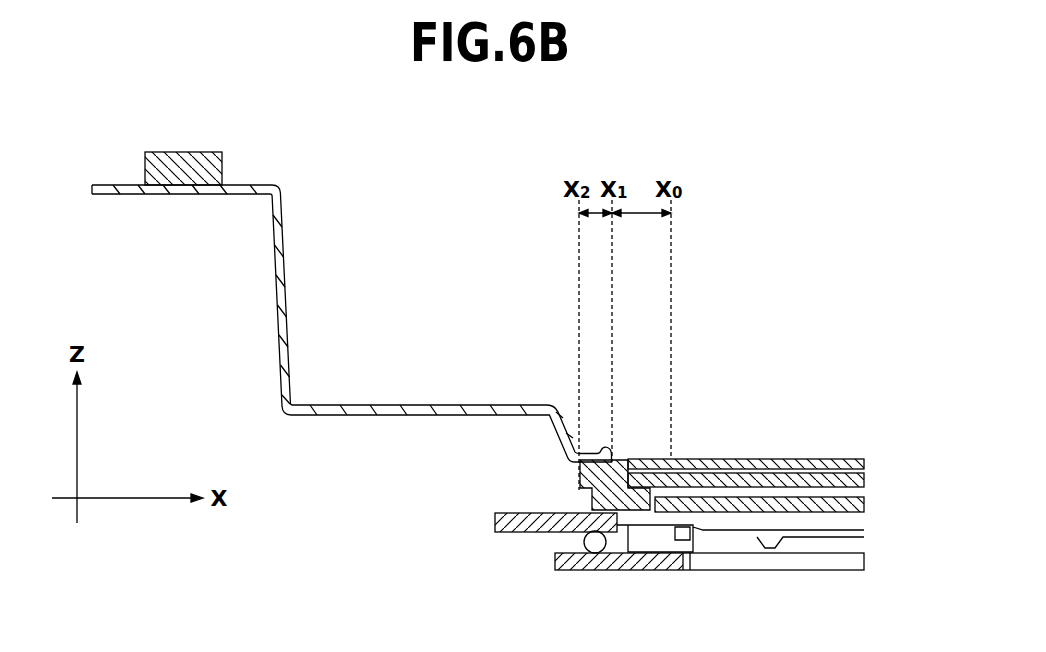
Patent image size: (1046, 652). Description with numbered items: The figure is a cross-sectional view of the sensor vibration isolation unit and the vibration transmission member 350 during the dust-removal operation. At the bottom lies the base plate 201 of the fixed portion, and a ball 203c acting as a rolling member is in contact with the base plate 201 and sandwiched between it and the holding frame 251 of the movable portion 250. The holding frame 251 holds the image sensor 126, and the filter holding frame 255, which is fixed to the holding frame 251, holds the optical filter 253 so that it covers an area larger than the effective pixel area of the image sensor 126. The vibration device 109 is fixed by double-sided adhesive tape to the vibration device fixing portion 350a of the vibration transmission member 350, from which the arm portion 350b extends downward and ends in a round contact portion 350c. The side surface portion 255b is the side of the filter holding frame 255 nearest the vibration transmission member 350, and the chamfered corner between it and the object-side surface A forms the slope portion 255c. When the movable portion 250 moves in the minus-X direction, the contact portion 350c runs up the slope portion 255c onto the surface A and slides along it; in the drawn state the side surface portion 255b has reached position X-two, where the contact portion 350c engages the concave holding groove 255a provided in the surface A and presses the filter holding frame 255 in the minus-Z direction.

The vibration device 109 is at (187, 152).
The vibration transmission member 350 is at (350, 280).
The vibration device fixing portion 350a is at (122, 184).
The arm portion 350b is at (393, 407).
The contact portion 350c is at (603, 452).
The filter holding frame 255 is at (612, 462).
The holding groove 255a is at (588, 494).
The side surface portion 255b is at (580, 477).
The slope portion 255c is at (567, 440).
The optical filter 253 is at (767, 458).
The movable portion 250 is at (823, 447).
The image sensor 126 is at (866, 500).
The holding frame 251 is at (495, 522).
The ball 203c is at (577, 539).
The base plate 201 is at (613, 570).
The surface A is at (622, 458).